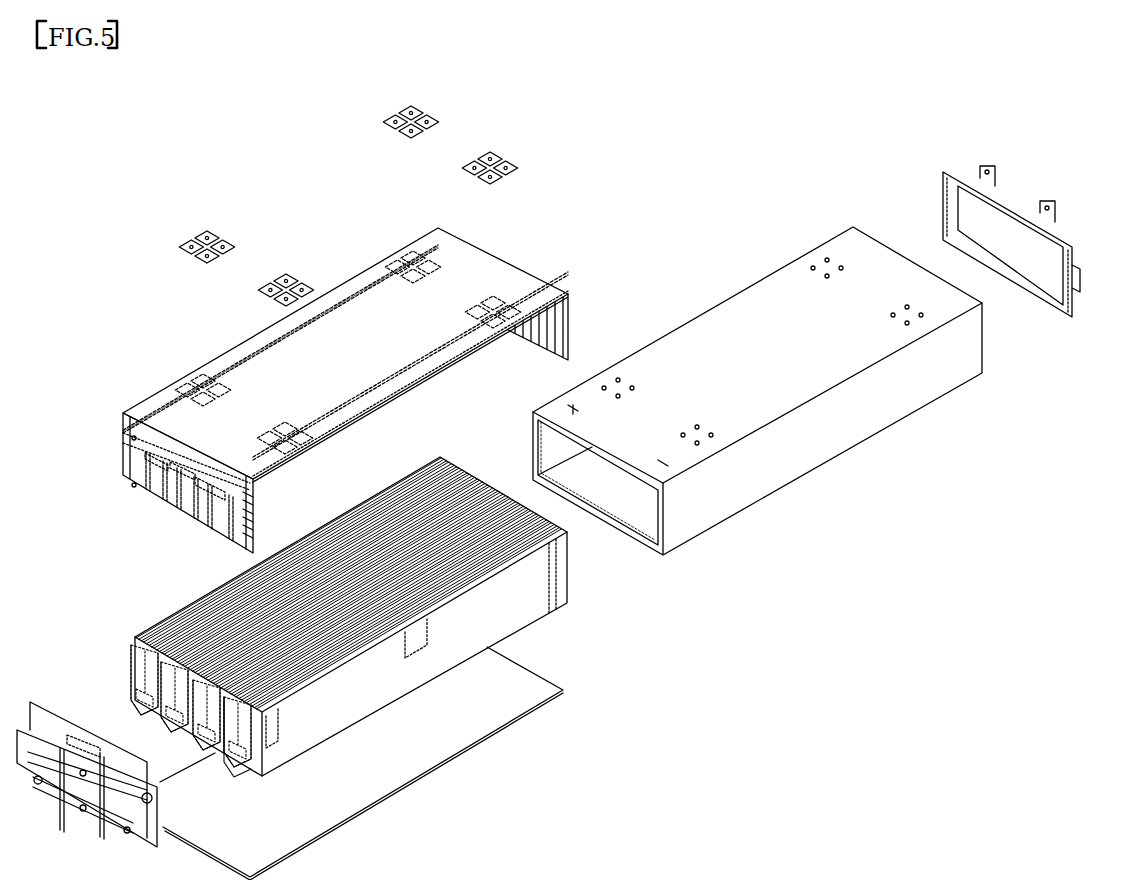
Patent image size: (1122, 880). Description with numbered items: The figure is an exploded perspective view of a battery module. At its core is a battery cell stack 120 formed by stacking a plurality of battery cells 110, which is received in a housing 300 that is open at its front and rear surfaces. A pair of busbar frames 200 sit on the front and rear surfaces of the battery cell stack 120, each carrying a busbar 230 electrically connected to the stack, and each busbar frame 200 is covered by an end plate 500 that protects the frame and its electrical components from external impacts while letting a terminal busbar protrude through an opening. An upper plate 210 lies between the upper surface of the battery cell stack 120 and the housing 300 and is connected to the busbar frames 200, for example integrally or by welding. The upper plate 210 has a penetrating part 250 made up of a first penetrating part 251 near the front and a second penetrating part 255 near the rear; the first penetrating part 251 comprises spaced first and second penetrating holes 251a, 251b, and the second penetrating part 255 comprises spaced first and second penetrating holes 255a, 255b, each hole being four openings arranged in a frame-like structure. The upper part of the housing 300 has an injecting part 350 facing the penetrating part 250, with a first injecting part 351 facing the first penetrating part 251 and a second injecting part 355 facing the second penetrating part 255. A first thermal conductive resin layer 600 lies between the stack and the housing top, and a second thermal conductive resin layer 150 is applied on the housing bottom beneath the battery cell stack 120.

The battery cell 110 is at (512, 608).
The battery cell stack 120 is at (348, 617).
The second thermal conductive resin layer 150 is at (425, 748).
The busbar frame 200 is at (501, 425).
The upper plate 210 is at (365, 285).
The busbar 230 is at (137, 488).
The penetrating part 250 is at (898, 608).
The first penetrating part 251 is at (499, 452).
The first penetrating hole 251a is at (178, 407).
The second penetrating hole 251b is at (300, 412).
The second penetrating part 255 is at (641, 425).
The first penetrating hole 255a is at (442, 255).
The second penetrating hole 255b is at (513, 294).
The housing 300 is at (757, 483).
The injecting part 350 is at (898, 718).
The first injecting part 351 is at (710, 420).
The second injecting part 355 is at (920, 305).
The end plate 500 is at (1045, 226).
The first thermal conductive resin layer 600 is at (458, 163).